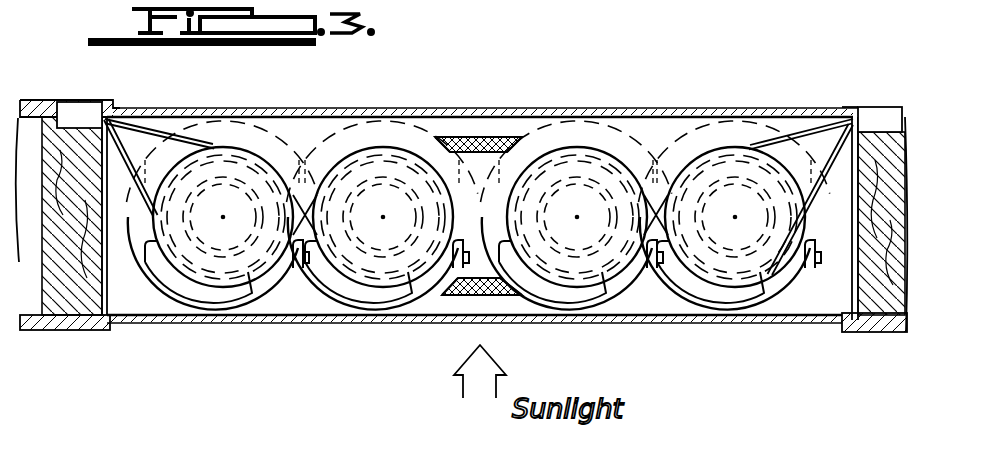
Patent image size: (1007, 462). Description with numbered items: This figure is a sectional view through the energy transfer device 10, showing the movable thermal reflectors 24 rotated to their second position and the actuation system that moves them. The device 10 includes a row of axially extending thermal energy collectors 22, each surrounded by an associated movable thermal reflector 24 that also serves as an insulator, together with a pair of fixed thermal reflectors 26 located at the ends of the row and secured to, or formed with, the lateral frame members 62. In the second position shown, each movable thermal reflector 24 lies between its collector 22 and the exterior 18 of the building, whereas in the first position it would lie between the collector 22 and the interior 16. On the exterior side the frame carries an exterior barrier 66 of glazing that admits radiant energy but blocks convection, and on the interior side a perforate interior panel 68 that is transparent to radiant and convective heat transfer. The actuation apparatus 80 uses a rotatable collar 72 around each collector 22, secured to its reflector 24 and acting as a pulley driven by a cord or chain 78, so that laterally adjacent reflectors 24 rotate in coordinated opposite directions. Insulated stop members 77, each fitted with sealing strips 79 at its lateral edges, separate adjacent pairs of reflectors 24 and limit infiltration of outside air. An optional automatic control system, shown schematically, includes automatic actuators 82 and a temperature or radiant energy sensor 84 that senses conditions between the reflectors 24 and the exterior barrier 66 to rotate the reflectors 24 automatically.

The energy transfer device 10 is at (110, 97).
The interior of the building structure 16 is at (652, 72).
The exterior of the building structure 18 is at (715, 364).
The thermal energy collector 22 is at (260, 185).
The movable thermal reflector 24 is at (195, 300).
The fixed thermal reflector 26 is at (829, 148).
The lateral frame member 62 is at (72, 200).
The exterior barrier 66 is at (305, 325).
The perforate interior panel 68 is at (674, 108).
The rotatable collar 72 is at (230, 312).
The insulated stop member 77 is at (478, 137).
The cord or chain 78 is at (143, 175).
The sealing strip 79 is at (447, 137).
The actuation apparatus 80 is at (231, 139).
The automatic actuator 82 is at (77, 112).
The temperature or radiant energy sensor 84 is at (828, 322).